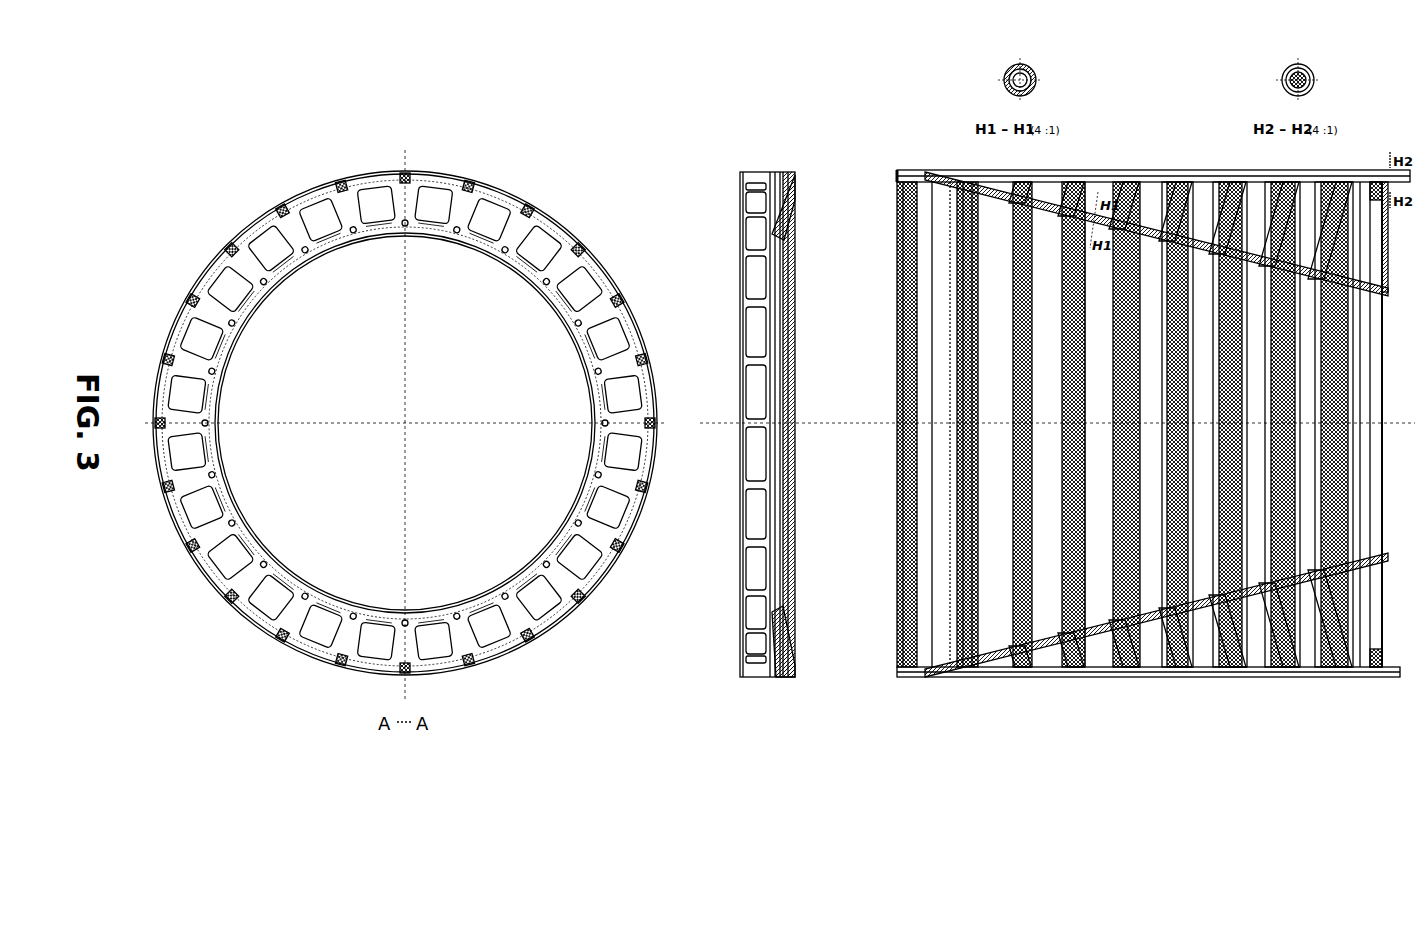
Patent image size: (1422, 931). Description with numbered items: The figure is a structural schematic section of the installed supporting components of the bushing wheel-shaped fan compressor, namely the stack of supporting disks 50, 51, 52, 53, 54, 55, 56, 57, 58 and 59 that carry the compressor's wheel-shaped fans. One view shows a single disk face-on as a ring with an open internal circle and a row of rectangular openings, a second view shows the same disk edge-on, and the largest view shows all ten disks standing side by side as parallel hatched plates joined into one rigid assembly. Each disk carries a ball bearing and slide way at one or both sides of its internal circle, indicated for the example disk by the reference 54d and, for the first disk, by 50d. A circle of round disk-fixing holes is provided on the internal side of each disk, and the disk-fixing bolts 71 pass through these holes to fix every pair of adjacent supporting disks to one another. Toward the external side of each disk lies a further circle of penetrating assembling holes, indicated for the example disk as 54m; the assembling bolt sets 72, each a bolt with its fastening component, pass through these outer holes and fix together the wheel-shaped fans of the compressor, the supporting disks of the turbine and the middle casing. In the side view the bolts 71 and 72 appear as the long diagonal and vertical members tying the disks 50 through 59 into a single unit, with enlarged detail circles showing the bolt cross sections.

The supporting disk 50 is at (903, 680).
The ball bearing and slide way 50d is at (907, 170).
The supporting disk 51 is at (953, 680).
The supporting disk 52 is at (1003, 680).
The supporting disk 53 is at (1053, 680).
The supporting disk 54 is at (1105, 680).
The assembling holes 54m is at (283, 213).
The ball bearing and slide way 54d is at (505, 253).
The supporting disk 55 is at (1155, 680).
The supporting disk 56 is at (1205, 680).
The supporting disk 57 is at (1255, 680).
The supporting disk 58 is at (1305, 680).
The supporting disk 59 is at (1355, 680).
The disk-fixing bolts 71 is at (1088, 182).
The assembling bolt sets 72 is at (1373, 175).